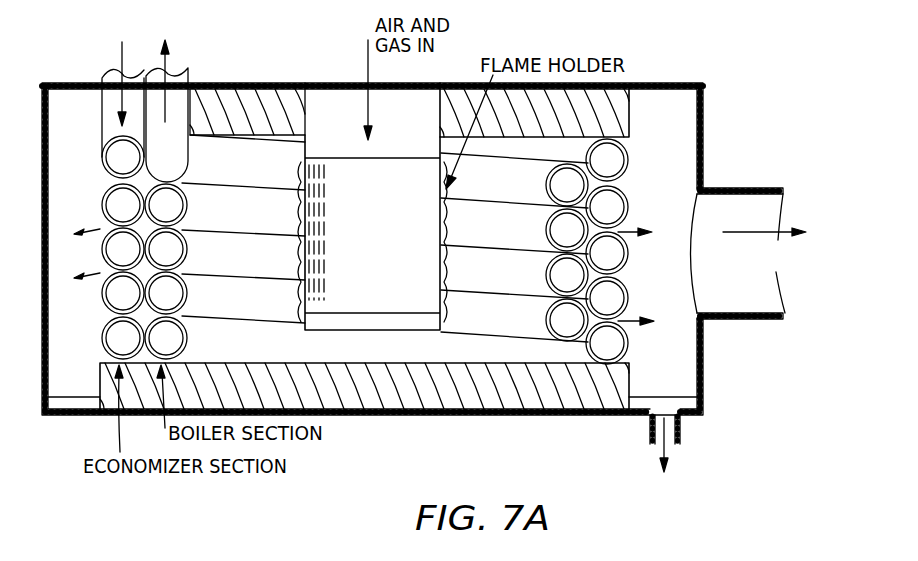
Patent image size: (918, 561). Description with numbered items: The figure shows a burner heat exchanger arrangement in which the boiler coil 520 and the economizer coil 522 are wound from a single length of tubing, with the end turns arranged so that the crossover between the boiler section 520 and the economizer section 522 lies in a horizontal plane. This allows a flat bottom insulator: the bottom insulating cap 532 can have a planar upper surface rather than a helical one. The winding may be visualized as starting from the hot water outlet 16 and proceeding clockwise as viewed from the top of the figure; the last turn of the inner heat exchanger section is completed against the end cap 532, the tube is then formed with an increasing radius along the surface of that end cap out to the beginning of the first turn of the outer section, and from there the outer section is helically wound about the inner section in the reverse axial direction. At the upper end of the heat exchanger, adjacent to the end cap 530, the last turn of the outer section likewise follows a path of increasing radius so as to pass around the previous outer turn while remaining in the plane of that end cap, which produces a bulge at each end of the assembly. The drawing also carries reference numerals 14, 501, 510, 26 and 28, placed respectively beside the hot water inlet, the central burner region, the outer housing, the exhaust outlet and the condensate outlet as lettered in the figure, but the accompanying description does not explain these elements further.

The hot water inlet pipe 14 is at (100, 78).
The hot water outlet 16 is at (190, 78).
The burner with flame holder 501 is at (298, 254).
The housing casing 510 is at (706, 134).
The boiler coil 520 is at (545, 219).
The economizer coil 522 is at (628, 204).
The end cap 530 is at (518, 138).
The bottom insulating cap 532 is at (548, 297).
The exhaust outlet 26 is at (740, 320).
The condensate outlet 28 is at (682, 432).